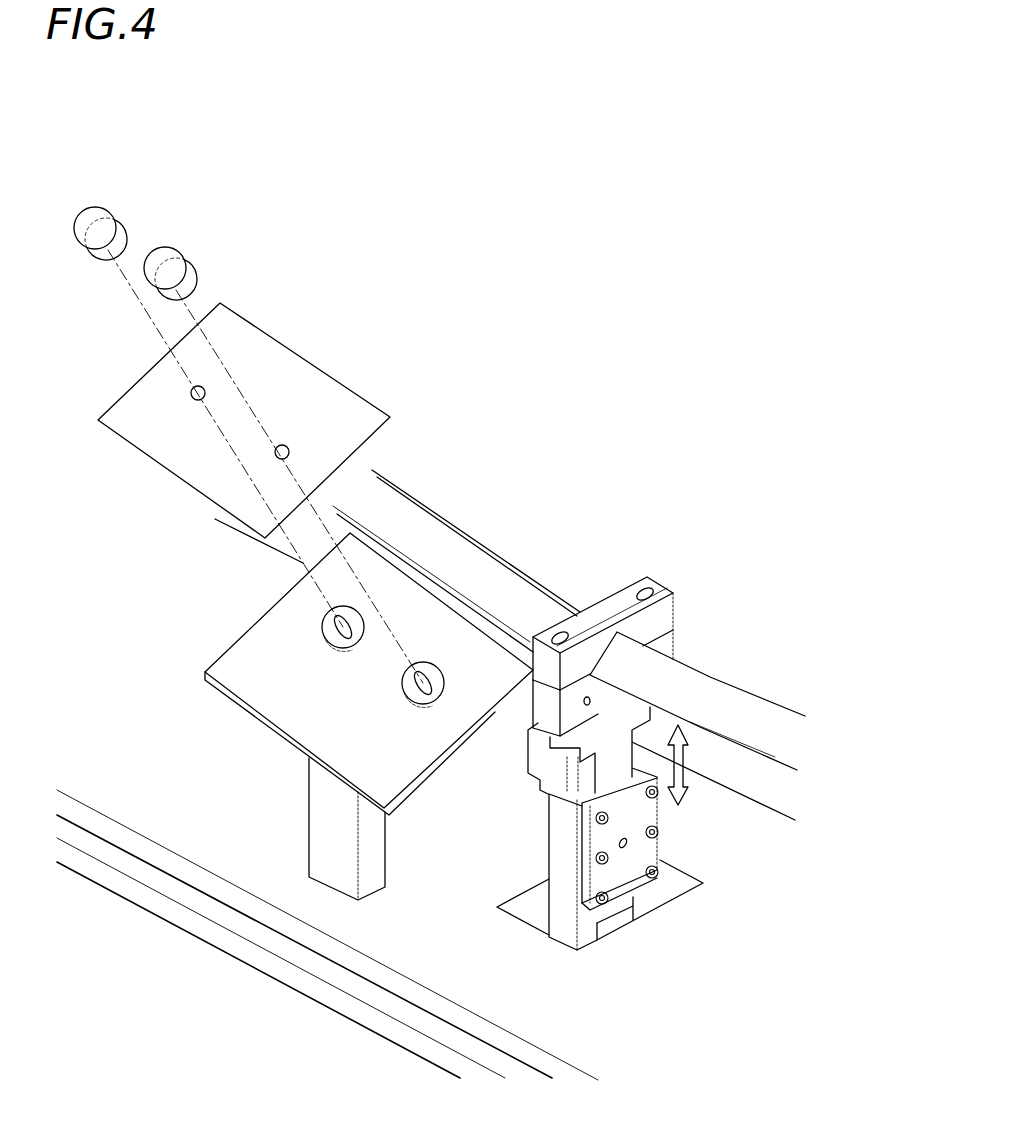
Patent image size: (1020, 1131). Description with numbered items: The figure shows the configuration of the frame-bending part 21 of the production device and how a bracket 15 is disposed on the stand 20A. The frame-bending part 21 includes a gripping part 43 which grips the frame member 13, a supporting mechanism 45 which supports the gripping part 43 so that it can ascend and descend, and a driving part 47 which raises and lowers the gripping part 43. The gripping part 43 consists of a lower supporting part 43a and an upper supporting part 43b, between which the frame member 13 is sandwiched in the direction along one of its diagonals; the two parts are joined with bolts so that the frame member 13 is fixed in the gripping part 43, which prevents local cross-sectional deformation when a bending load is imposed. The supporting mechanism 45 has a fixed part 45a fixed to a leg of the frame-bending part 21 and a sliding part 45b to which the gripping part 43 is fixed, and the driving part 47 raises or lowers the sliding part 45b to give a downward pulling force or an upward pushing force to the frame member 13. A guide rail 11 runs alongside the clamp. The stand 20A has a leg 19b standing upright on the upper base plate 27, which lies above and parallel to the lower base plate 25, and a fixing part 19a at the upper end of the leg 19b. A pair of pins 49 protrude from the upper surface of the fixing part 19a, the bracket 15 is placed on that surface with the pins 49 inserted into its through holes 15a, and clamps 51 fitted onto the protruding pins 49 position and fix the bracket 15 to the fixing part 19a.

The clamps 51 is at (113, 208).
The bracket 15 is at (241, 401).
The through holes 15a is at (191, 393).
The rail / guide beam 11 is at (455, 522).
The frame-bending part 21 is at (679, 608).
The gripping part 43 is at (679, 625).
The lower supporting part 43a is at (592, 689).
The upper supporting part 43b is at (660, 612).
The frame member 13 is at (752, 716).
The stand 20A is at (319, 716).
The fixing part 19a is at (247, 686).
The leg 19b is at (320, 794).
The pins 49 is at (322, 627).
The driving part 47 is at (529, 768).
The supporting mechanism 45 is at (661, 864).
The fixed part 45a is at (615, 778).
The sliding part 45b is at (627, 870).
The upper base plate 27 is at (155, 853).
The lower base plate 25 is at (222, 935).